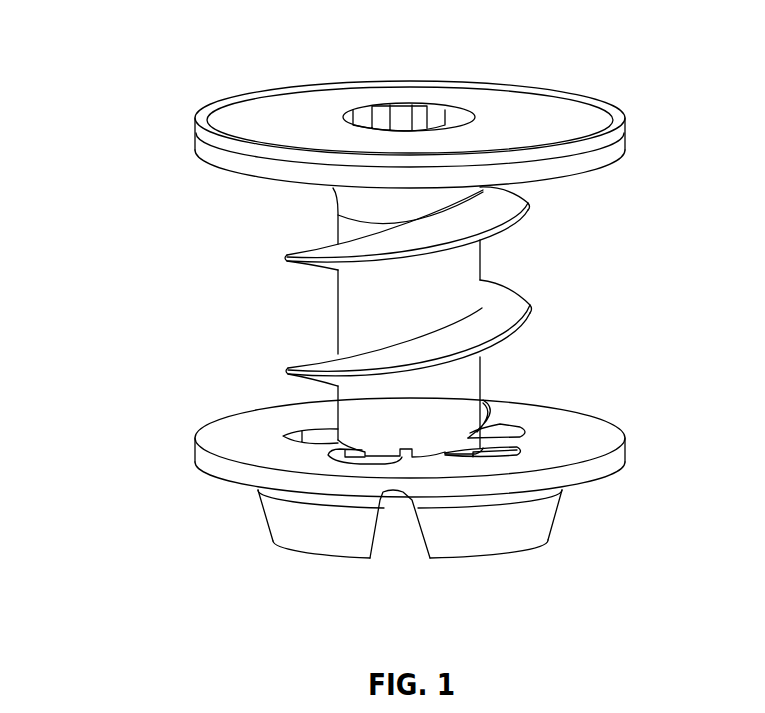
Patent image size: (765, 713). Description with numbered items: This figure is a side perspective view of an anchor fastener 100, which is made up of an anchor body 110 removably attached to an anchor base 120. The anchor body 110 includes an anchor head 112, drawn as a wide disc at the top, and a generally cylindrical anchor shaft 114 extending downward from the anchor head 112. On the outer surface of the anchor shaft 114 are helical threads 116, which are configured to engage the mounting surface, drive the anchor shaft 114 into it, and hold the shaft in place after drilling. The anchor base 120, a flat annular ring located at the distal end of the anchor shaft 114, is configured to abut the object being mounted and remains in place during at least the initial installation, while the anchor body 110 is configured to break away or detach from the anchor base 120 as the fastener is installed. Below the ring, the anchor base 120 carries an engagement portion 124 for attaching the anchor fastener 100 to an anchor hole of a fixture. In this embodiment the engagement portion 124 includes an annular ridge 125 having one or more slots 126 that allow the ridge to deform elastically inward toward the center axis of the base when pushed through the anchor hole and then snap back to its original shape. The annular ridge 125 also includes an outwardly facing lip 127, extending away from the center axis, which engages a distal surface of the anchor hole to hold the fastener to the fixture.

The anchor fastener 100 is at (145, 38).
The anchor body 110 is at (160, 80).
The anchor head 112 is at (613, 123).
The anchor shaft 114 is at (473, 272).
The helical threads 116 is at (483, 278).
The anchor base 120 is at (365, 558).
The engagement portion 124 is at (586, 518).
The annular ridge 125 is at (515, 542).
The slots 126 is at (391, 559).
The outwardly facing lip 127 is at (440, 507).